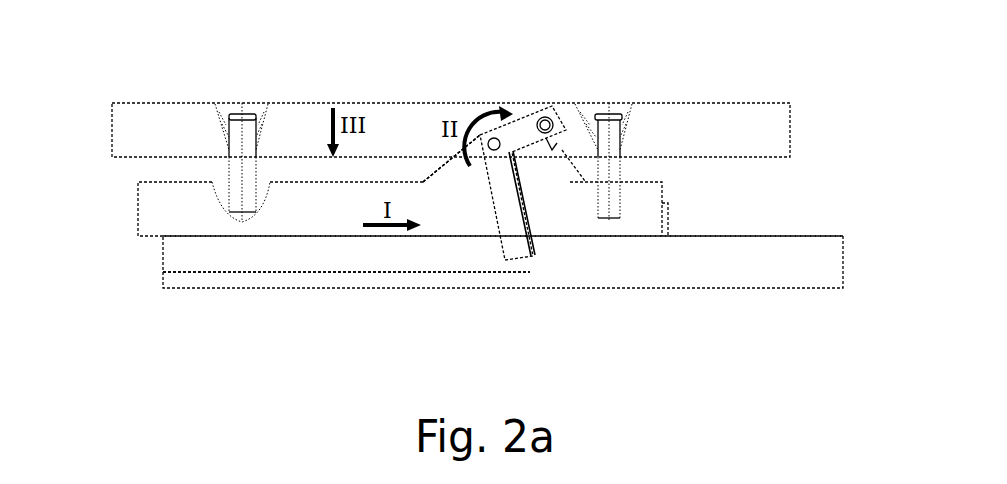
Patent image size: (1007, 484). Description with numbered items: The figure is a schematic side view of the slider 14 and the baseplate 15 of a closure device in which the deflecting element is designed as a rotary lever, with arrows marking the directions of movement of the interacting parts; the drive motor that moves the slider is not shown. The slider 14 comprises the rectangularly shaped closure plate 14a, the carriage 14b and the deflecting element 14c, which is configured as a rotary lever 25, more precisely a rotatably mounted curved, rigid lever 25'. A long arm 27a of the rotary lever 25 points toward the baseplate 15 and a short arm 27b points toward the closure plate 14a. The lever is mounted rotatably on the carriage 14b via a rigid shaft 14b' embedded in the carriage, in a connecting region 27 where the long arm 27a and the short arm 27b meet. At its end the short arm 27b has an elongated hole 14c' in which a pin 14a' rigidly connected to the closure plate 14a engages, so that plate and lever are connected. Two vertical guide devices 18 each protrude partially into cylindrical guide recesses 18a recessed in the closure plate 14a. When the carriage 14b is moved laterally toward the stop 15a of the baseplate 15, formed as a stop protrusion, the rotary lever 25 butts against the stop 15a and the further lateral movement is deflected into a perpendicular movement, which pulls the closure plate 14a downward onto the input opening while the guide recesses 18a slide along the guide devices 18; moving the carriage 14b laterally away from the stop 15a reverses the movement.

The slider 14 is at (124, 181).
The closure plate 14a is at (454, 96).
The carriage 14b is at (463, 249).
The deflecting element 14c is at (427, 235).
The rotary lever 25 is at (451, 158).
The curved, rigid lever 25' is at (451, 158).
The pin 14a' is at (573, 79).
The rigid shaft 14b' is at (522, 93).
The elongated hole 14c' is at (599, 83).
The baseplate 15 is at (610, 267).
The stop 15a is at (350, 299).
The vertical guide device 18 is at (247, 138).
The guide recess 18a is at (238, 108).
The connecting region 27 is at (493, 178).
The long arm 27a is at (537, 200).
The short arm 27b is at (553, 143).